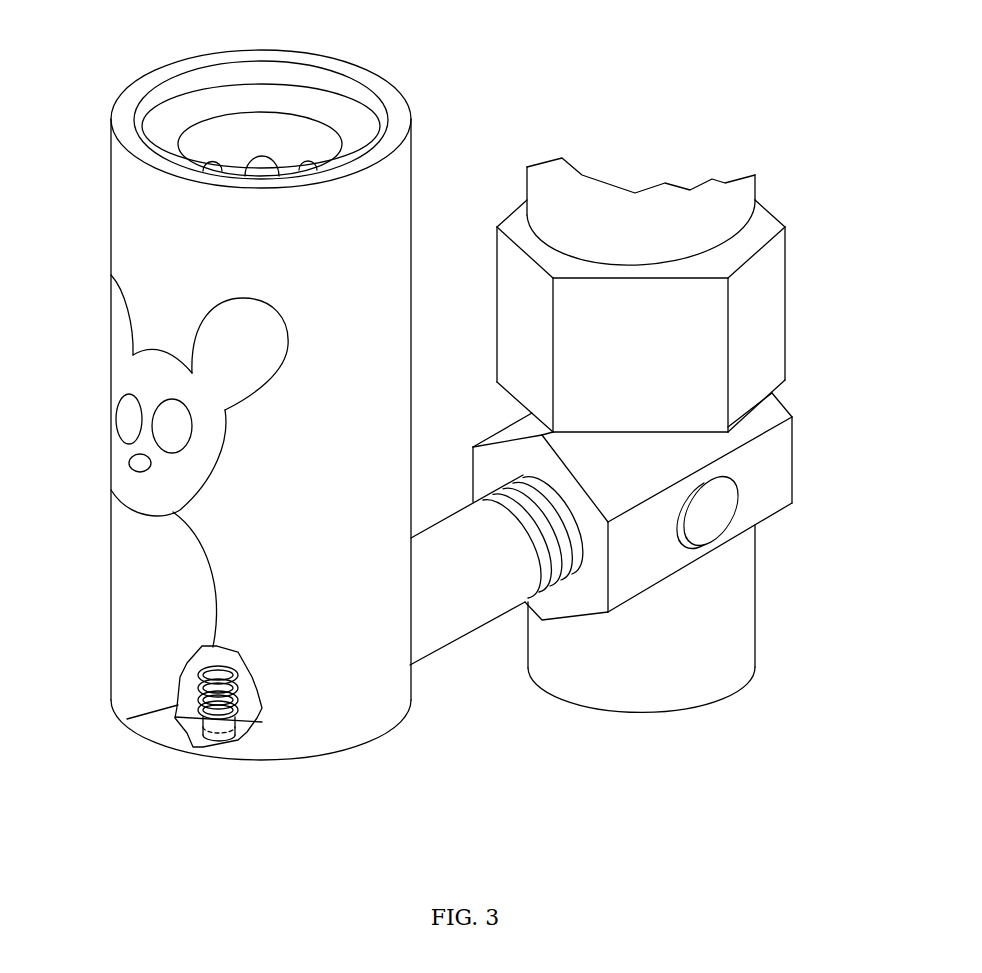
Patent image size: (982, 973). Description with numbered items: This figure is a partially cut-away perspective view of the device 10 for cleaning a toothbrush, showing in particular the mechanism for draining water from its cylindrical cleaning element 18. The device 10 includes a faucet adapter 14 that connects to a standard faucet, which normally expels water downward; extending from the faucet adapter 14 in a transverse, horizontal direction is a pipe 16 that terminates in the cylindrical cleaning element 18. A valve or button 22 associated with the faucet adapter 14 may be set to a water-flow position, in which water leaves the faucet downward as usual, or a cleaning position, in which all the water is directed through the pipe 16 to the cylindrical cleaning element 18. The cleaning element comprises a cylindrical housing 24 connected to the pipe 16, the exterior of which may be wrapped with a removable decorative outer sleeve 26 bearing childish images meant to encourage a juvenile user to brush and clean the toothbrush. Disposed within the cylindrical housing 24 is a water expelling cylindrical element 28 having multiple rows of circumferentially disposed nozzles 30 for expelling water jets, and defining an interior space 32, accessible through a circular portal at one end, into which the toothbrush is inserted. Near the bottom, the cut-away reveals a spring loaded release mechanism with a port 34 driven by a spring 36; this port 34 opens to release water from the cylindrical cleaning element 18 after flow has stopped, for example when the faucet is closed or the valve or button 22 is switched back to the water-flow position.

The device for cleaning a toothbrush 10 is at (677, 613).
The faucet adapter 14 is at (766, 354).
The pipe 16 is at (465, 592).
The cylindrical cleaning element 18 is at (433, 196).
The valve or button 22 is at (725, 517).
The cylindrical housing 24 is at (122, 103).
The removable decorative outer sleeve 26 is at (152, 581).
The water expelling cylindrical element 28 is at (176, 110).
The nozzles 30 is at (263, 168).
The interior space 32 is at (230, 130).
The port 34 is at (188, 725).
The spring 36 is at (228, 725).